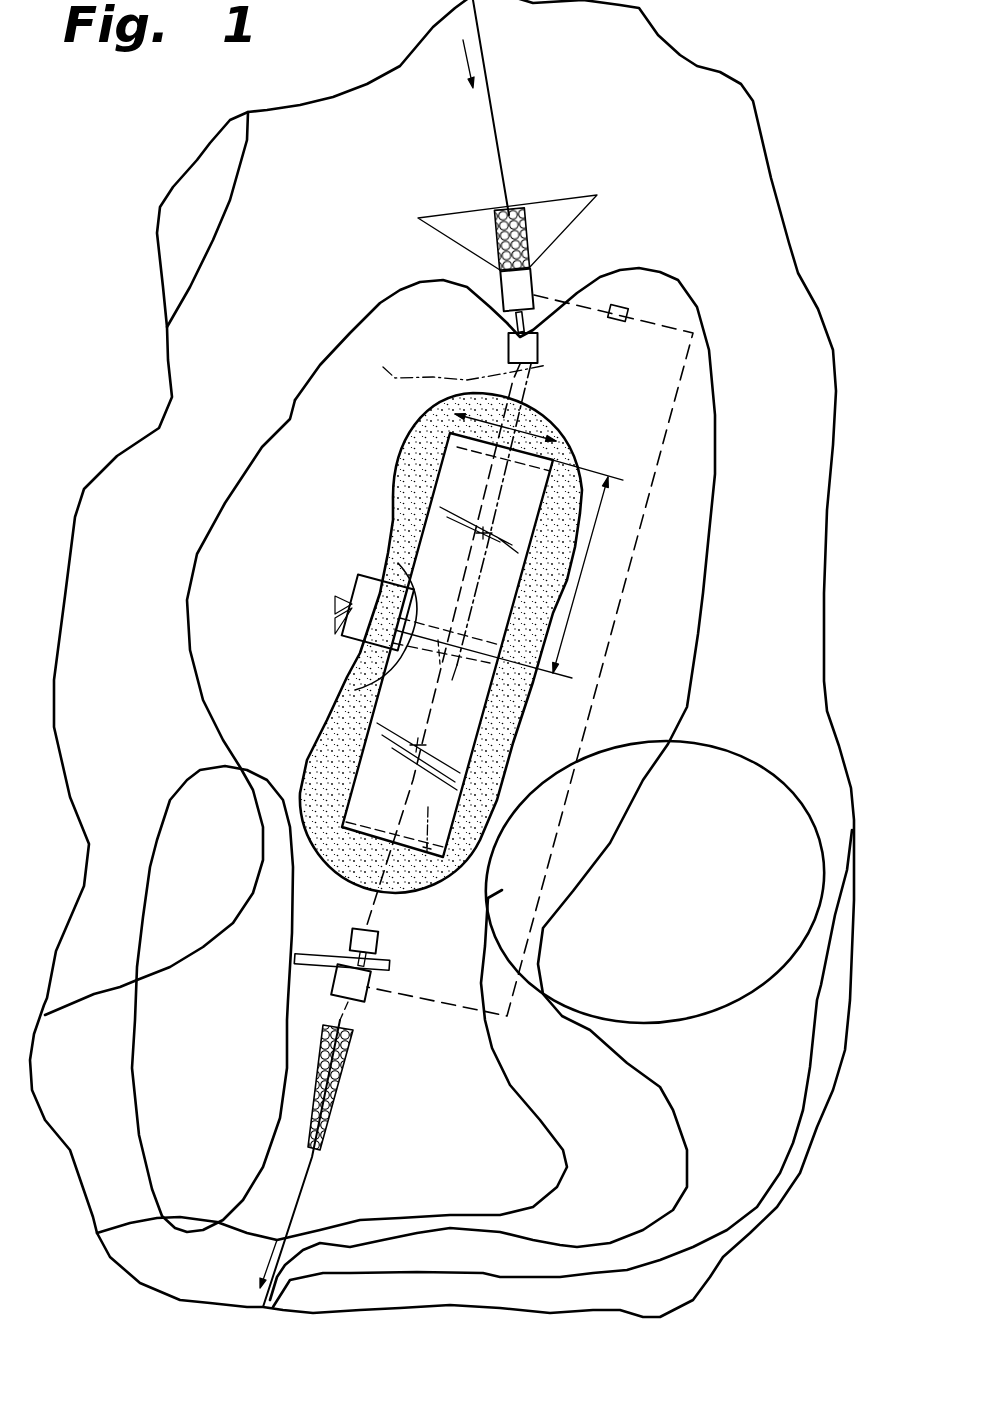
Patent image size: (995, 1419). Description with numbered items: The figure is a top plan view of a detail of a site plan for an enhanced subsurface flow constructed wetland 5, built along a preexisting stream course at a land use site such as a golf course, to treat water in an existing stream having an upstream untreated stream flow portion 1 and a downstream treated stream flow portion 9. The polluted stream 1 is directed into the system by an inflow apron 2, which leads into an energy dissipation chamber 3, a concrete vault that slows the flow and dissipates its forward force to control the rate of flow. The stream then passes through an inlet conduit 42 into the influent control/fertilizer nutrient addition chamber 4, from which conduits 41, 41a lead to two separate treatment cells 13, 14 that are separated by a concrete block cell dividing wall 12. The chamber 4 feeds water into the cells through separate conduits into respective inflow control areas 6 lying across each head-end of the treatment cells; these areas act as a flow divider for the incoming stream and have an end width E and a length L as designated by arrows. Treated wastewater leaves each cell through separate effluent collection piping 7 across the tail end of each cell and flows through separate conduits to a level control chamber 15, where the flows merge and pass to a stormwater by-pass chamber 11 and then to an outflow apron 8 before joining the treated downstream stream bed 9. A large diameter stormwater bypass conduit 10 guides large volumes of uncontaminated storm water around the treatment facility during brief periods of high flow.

The upstream untreated stream flow portion 1 is at (507, 88).
The inflow apron 2 is at (467, 198).
The energy dissipation chamber 3 is at (501, 287).
The inlet conduit 42 is at (514, 320).
The influent control/fertilizer nutrient addition chamber 4 is at (509, 348).
The conduit 41 is at (449, 369).
The conduit 41a is at (553, 372).
The constructed wetland 5 is at (585, 449).
The inflow control areas 6 is at (422, 427).
The effluent collection piping 7 is at (398, 563).
The outflow apron 8 is at (352, 1082).
The downstream treated stream flow portion 9 is at (303, 1207).
The conduit 10 is at (591, 720).
The stormwater by-pass chamber 11 is at (366, 1000).
The cell dividing wall 12 is at (358, 688).
The treatment cell 13 is at (427, 500).
The treatment cell 14 is at (353, 750).
The level control chamber 15 is at (380, 940).
The end width E is at (518, 432).
The length L is at (586, 577).